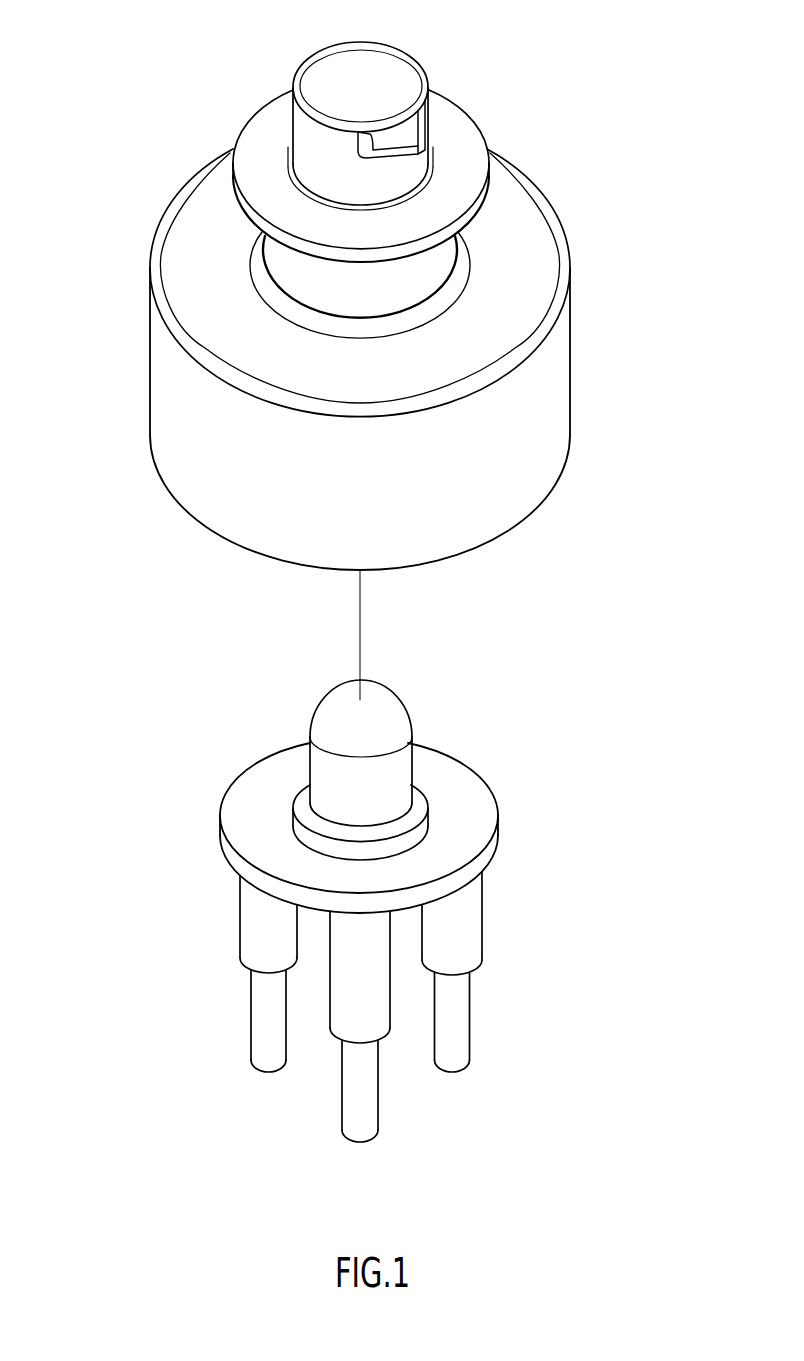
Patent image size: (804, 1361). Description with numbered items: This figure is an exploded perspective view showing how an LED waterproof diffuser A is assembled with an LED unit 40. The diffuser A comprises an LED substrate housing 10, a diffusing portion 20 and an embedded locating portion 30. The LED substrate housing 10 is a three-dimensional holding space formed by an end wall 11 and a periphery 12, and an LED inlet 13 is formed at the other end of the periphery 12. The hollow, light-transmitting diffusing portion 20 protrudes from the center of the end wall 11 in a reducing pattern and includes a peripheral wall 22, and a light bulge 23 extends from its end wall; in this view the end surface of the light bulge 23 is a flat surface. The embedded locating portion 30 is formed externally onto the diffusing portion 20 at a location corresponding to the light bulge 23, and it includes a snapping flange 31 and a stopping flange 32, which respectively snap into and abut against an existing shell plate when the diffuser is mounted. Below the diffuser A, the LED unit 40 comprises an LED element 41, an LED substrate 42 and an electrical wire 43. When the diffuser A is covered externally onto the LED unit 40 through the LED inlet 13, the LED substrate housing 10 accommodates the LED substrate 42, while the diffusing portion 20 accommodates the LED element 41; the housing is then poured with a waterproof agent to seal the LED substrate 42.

The LED waterproof diffuser A is at (598, 127).
The LED substrate housing 10 is at (85, 409).
The end wall 11 is at (236, 357).
The periphery 12 is at (190, 468).
The LED inlet 13 is at (489, 566).
The diffusing portion 20 is at (245, 245).
The peripheral wall 22 is at (413, 275).
The light bulge 23 is at (430, 125).
The embedded locating portion 30 is at (120, 63).
The snapping flange 31 is at (358, 150).
The stopping flange 32 is at (248, 150).
The LED unit 40 is at (587, 800).
The LED element 41 is at (410, 725).
The LED substrate 42 is at (445, 843).
The electrical wire 43 is at (467, 1000).